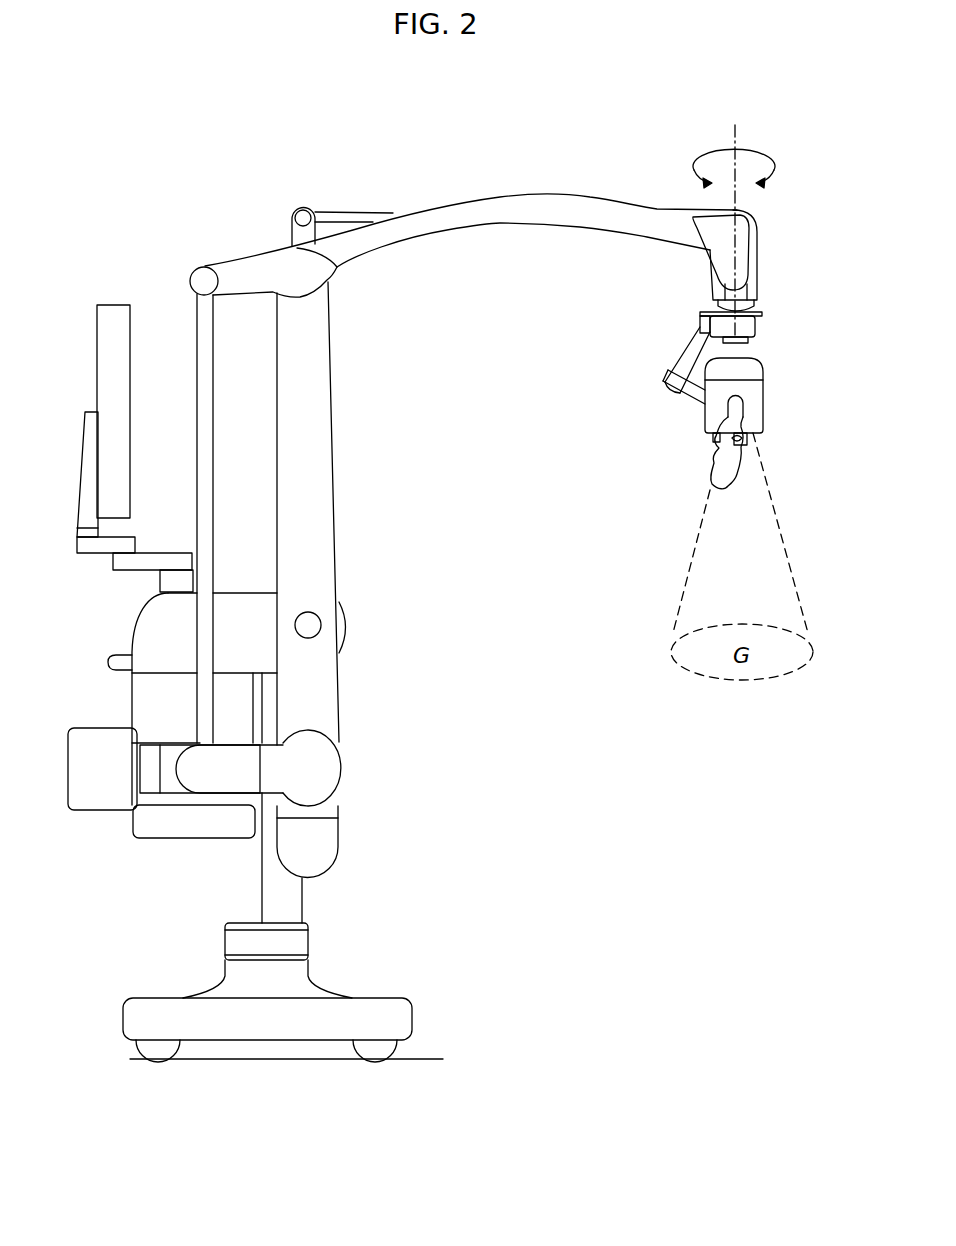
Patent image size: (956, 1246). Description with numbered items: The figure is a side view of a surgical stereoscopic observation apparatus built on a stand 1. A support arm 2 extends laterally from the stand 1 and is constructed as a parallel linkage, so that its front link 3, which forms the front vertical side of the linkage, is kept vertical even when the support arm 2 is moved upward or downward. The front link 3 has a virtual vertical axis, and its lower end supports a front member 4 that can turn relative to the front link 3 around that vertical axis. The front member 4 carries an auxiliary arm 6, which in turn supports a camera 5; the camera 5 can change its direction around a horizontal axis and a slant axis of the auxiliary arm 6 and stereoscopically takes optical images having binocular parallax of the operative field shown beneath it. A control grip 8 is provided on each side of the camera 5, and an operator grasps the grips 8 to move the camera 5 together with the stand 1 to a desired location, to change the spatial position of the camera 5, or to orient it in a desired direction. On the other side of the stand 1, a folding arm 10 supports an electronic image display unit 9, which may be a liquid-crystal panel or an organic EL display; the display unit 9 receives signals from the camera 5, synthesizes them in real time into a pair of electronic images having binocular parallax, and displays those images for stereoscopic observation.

The stand 1 is at (397, 616).
The support arm 2 is at (527, 197).
The front link 3 is at (757, 244).
The front member 4 is at (755, 322).
The camera 5 is at (763, 397).
The auxiliary arm 6 is at (690, 353).
The control grip 8 is at (748, 463).
The electronic image display unit 9 is at (97, 362).
The folding arm 10 is at (138, 570).